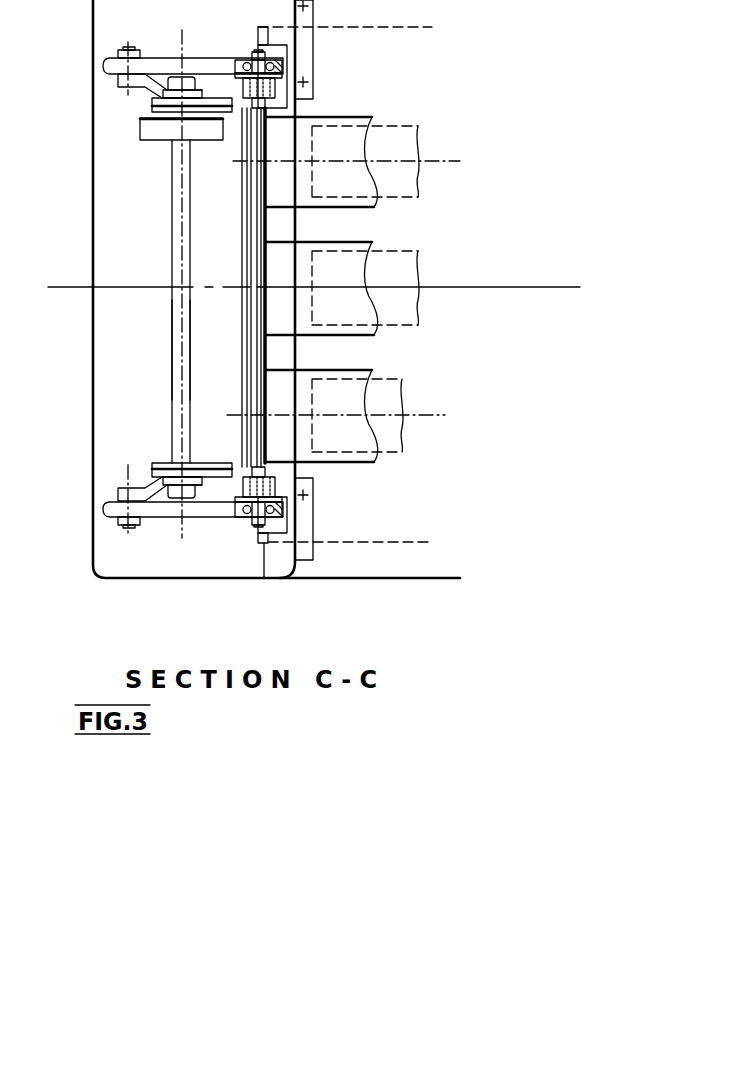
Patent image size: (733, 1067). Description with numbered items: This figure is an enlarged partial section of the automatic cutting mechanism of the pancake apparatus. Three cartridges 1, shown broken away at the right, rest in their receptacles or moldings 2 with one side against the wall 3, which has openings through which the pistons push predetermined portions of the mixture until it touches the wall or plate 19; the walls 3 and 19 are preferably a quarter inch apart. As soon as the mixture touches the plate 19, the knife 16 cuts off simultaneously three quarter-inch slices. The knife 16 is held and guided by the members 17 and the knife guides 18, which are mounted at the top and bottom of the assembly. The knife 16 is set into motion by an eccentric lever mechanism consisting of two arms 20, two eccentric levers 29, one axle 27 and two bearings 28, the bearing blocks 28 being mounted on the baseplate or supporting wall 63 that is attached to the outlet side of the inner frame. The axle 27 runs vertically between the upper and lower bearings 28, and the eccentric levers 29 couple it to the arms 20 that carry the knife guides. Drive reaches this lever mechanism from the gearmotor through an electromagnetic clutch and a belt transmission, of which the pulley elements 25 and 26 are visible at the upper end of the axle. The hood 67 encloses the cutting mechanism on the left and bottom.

The cartridge 1 is at (373, 207).
The molding 2 is at (418, 197).
The wall 3 is at (258, 352).
The knife 16 is at (257, 390).
The member 17 is at (247, 105).
The knife guide 18 is at (278, 96).
The wall 19 is at (247, 413).
The arm 20 is at (203, 58).
The belt transmission 25 is at (155, 140).
The belt transmission 26 is at (142, 128).
The axle 27 is at (168, 392).
The bearing 28 is at (152, 107).
The eccentric lever 29 is at (150, 87).
The baseplate 63 is at (242, 347).
The hood 67 is at (148, 580).